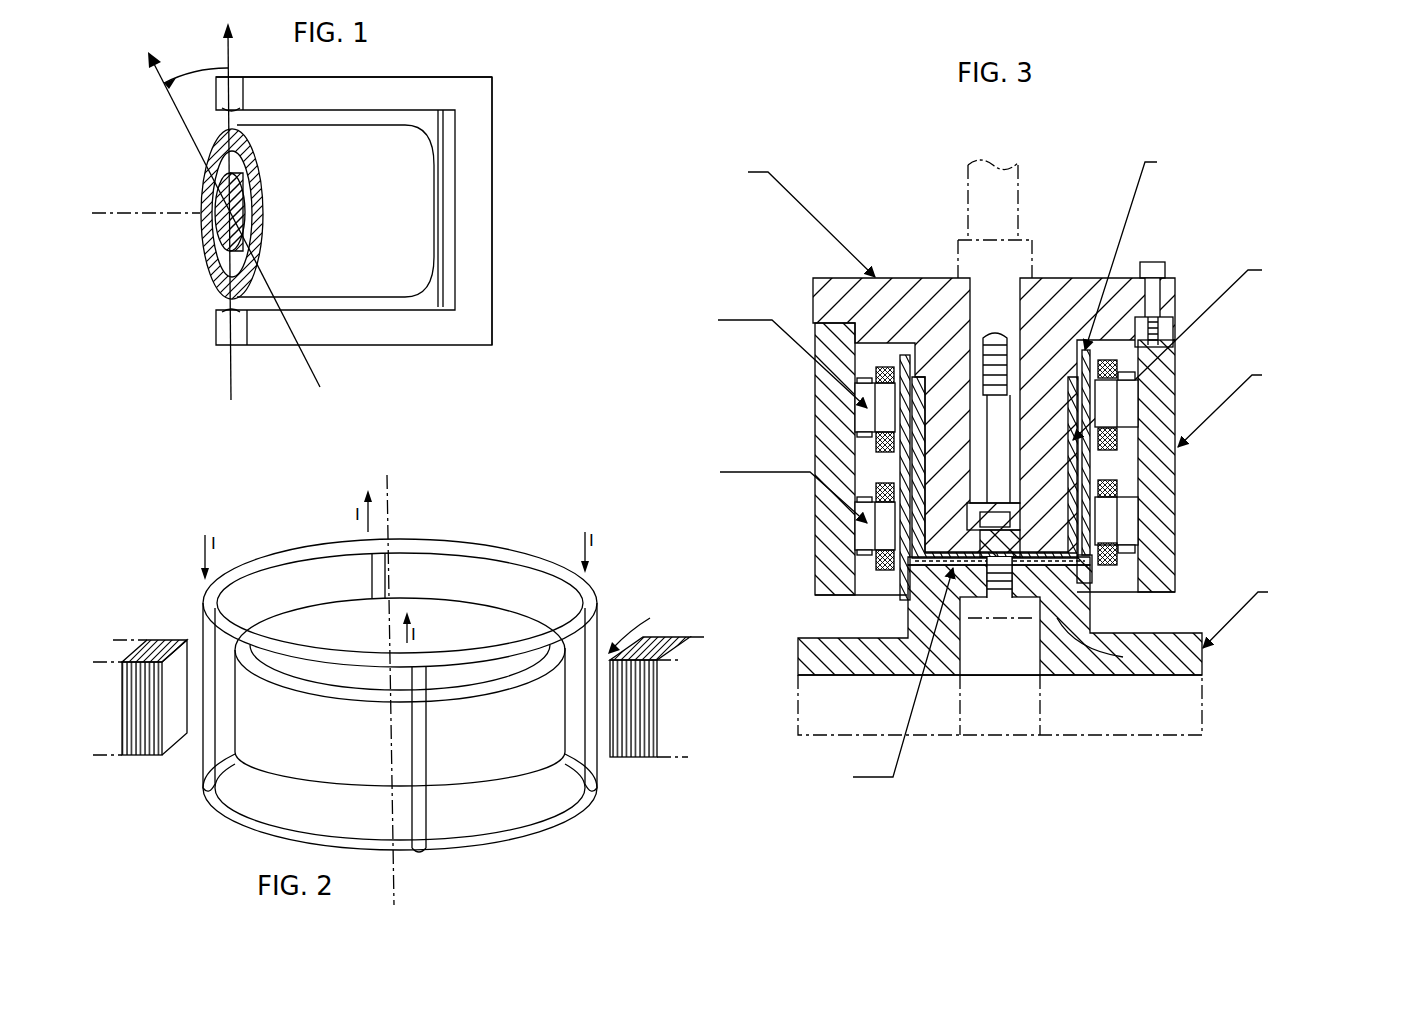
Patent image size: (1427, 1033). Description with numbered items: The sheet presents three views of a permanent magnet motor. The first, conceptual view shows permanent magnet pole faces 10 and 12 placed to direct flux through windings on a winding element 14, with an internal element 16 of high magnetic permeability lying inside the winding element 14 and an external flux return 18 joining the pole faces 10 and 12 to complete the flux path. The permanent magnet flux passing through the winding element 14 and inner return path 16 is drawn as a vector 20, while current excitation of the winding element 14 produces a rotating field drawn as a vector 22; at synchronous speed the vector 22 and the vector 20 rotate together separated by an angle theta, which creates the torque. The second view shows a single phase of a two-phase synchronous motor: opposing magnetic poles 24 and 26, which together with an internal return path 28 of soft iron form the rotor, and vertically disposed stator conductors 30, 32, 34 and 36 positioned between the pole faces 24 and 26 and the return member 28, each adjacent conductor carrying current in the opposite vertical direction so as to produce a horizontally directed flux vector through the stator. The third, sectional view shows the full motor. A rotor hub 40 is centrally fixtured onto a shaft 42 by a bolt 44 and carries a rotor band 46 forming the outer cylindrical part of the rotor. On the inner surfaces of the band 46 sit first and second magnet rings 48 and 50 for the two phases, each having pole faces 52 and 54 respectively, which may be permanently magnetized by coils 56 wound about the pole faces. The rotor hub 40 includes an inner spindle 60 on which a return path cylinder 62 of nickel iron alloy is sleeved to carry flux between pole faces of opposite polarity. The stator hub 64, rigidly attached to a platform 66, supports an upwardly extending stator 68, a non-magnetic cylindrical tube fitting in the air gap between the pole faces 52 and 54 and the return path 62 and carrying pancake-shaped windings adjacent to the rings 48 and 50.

In FIG. 1, the permanent magnet pole face 10 is at (370, 333).
In FIG. 1, the permanent magnet pole face 12 is at (375, 80).
In FIG. 1, the winding element 14 is at (247, 157).
In FIG. 1, the internal element 16 is at (238, 193).
In FIG. 1, the external flux return 18 is at (478, 203).
In FIG. 1, the flux vector 20 is at (232, 372).
In FIG. 1, the rotating field vector 22 is at (310, 370).
In FIG. 2, the magnetic pole 24 is at (130, 648).
In FIG. 2, the magnetic pole 26 is at (681, 643).
In FIG. 2, the internal return path 28 is at (427, 602).
In FIG. 2, the conductor 30 is at (205, 628).
In FIG. 2, the conductor 32 is at (375, 573).
In FIG. 2, the conductor 34 is at (588, 628).
In FIG. 2, the conductor 36 is at (408, 738).
In FIG. 3, the rotor hub 40 is at (822, 282).
In FIG. 3, the shaft 42 is at (997, 200).
In FIG. 3, the bolt 44 is at (990, 330).
In FIG. 3, the rotor band 46 is at (1157, 487).
In FIG. 3, the first magnet ring 48 is at (1128, 405).
In FIG. 3, the second magnet ring 50 is at (1128, 517).
In FIG. 3, the pole face 52 is at (882, 423).
In FIG. 3, the pole face 54 is at (882, 537).
In FIG. 3, the coil 56 is at (887, 364).
In FIG. 3, the inner spindle 60 is at (1045, 477).
In FIG. 3, the return path cylinder 62 is at (918, 392).
In FIG. 3, the stator hub 64 is at (1205, 645).
In FIG. 3, the platform 66 is at (1005, 700).
In FIG. 3, the stator 68 is at (902, 357).